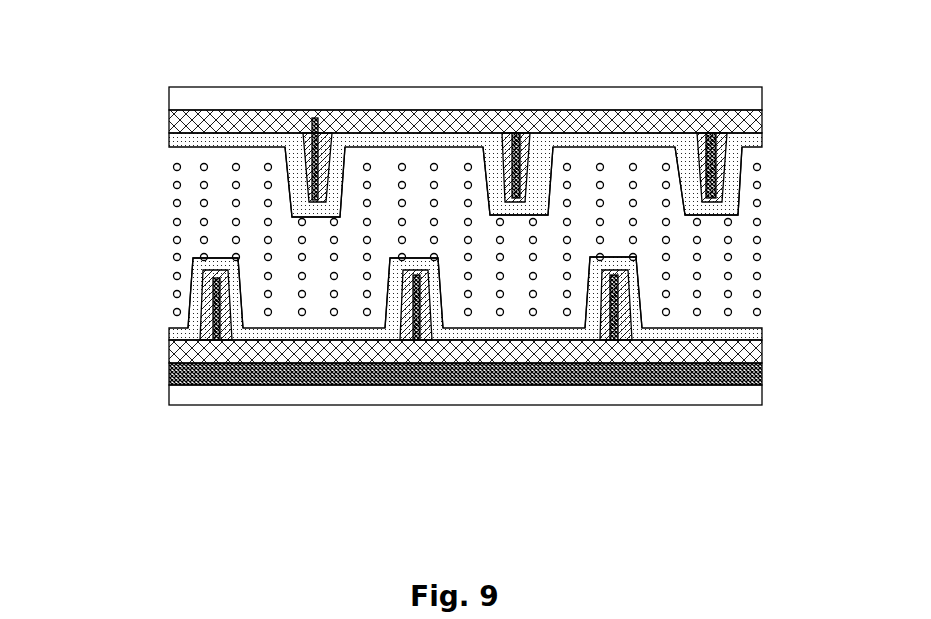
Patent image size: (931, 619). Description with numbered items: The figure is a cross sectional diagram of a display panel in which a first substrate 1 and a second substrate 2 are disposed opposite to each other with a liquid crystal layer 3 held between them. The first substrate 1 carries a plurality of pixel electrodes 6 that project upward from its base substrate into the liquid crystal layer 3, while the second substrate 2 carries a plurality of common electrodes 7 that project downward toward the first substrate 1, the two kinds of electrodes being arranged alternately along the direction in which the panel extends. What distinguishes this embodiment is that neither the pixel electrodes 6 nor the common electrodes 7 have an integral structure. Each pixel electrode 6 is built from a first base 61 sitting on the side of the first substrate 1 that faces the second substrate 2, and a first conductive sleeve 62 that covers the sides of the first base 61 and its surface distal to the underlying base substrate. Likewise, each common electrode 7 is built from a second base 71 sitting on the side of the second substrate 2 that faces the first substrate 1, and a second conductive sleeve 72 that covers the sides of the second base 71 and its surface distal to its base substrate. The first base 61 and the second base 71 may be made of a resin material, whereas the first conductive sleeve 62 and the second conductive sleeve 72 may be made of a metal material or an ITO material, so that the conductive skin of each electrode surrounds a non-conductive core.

The first substrate 1 is at (138, 360).
The second substrate 2 is at (138, 120).
The liquid crystal layer 3 is at (735, 240).
The pixel electrode 6 is at (423, 372).
The first base 61 is at (415, 338).
The first conductive sleeve 62 is at (422, 326).
The common electrode 7 is at (304, 116).
The second base 71 is at (313, 136).
The second conductive sleeve 72 is at (321, 130).